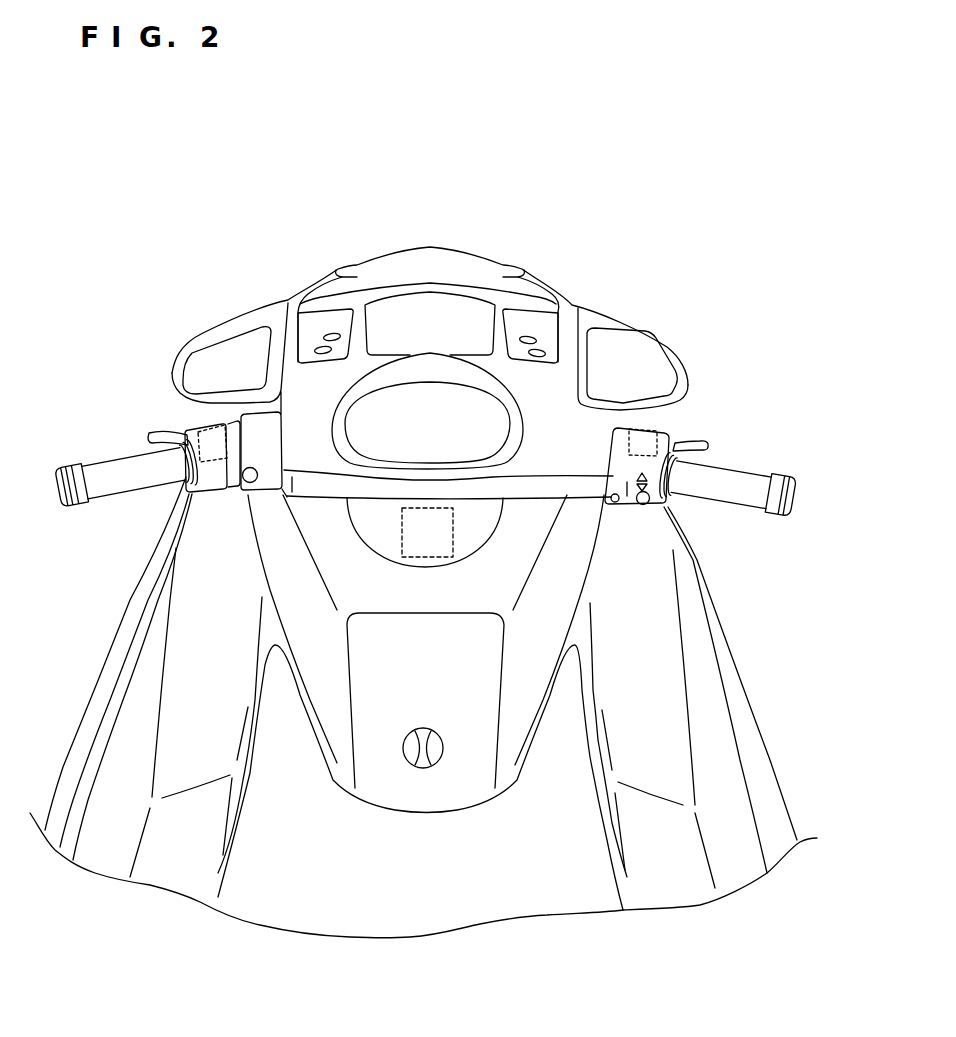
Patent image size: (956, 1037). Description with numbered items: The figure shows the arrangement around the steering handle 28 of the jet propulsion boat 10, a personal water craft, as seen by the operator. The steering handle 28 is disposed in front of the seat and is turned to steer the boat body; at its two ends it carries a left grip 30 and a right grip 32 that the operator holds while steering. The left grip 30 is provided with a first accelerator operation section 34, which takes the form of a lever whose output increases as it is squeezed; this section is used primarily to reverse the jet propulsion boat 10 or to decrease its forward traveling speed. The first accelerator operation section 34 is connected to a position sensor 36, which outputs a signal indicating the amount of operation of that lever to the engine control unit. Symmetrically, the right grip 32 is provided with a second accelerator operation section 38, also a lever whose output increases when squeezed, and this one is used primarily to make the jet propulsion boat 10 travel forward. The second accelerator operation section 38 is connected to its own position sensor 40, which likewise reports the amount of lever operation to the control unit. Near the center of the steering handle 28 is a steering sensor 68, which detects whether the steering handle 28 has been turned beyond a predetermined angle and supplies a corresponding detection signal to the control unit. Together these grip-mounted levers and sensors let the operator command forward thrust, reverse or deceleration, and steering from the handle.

The jet propulsion boat 10 is at (240, 268).
The steering handle 28 is at (322, 391).
The left grip 30 is at (100, 472).
The right grip 32 is at (752, 482).
The first accelerator operation section 34 is at (170, 432).
The position sensor 36 is at (213, 432).
The second accelerator operation section 38 is at (700, 441).
The position sensor 40 is at (643, 430).
The steering sensor 68 is at (420, 520).